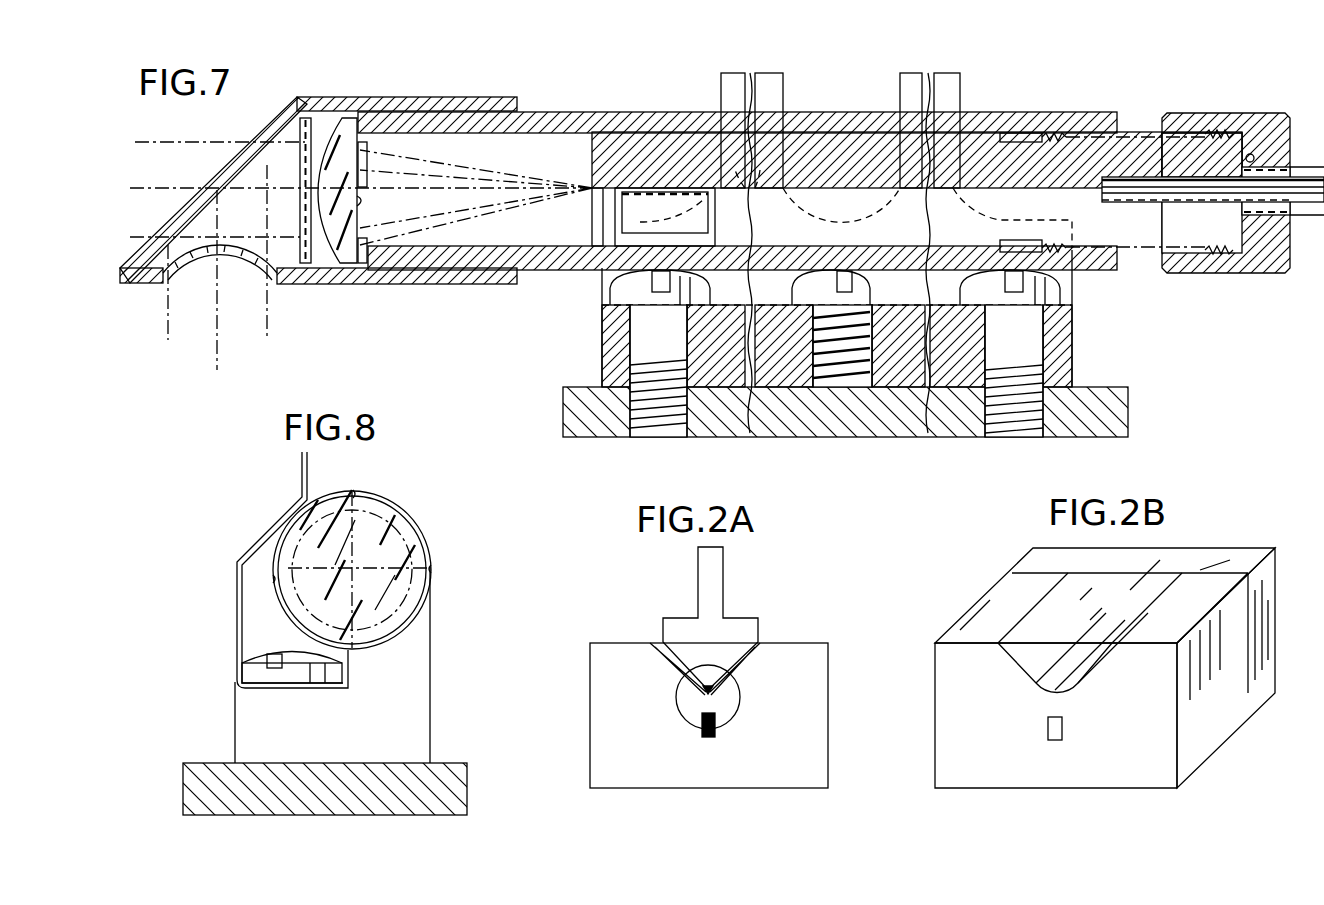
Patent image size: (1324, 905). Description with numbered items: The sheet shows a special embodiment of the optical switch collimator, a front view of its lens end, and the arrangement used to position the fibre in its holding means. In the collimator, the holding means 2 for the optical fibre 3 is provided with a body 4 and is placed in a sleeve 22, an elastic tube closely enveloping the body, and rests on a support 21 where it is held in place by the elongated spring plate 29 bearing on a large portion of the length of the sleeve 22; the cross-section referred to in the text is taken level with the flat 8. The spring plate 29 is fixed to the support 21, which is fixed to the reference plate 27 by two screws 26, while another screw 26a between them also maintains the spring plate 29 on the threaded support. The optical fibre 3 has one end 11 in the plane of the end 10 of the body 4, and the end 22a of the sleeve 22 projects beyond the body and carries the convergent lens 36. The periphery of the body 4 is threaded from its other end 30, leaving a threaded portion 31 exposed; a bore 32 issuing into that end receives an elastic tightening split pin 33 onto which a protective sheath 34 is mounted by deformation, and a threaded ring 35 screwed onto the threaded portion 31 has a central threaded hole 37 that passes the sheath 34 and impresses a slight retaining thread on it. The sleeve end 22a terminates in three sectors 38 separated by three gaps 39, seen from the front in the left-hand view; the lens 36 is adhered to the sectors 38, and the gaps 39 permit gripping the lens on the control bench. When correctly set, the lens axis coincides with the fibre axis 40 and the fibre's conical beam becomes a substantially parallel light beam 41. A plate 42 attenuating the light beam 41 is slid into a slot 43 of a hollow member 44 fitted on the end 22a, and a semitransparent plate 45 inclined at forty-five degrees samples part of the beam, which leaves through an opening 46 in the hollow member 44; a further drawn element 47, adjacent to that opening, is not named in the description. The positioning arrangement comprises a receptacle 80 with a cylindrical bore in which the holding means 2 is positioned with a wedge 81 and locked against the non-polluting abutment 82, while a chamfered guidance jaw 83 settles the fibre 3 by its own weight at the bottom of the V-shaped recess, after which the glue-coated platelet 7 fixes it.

In FIG. 7, the holding means 2 is at (991, 122).
In FIG. 2A, the holding means 2 is at (742, 702).
In FIG. 7, the optical fibre 3 is at (1052, 176).
In FIG. 2A, the optical fibre 3 is at (703, 690).
In FIG. 7, the body 4 is at (860, 160).
In FIG. 7, the platelet 7 is at (710, 195).
In FIG. 7, the flat 8 is at (722, 232).
In FIG. 7, the end of body 10 is at (590, 226).
In FIG. 7, the end of optical fibre 11 is at (586, 179).
In FIG. 7, the support 21 is at (608, 345).
In FIG. 8, the support 21 is at (431, 702).
In FIG. 7, the sleeve 22 is at (1035, 122).
In FIG. 8, the sleeve 22 is at (410, 513).
In FIG. 7, the end of sleeve 22a is at (408, 284).
In FIG. 7, the screws 26 is at (692, 343).
In FIG. 8, the screws 26 is at (300, 680).
In FIG. 7, the screw 26a is at (815, 350).
In FIG. 7, the plate 27 is at (1092, 398).
In FIG. 8, the plate 27 is at (446, 765).
In FIG. 7, the spring plate 29 is at (783, 88).
In FIG. 8, the spring plate 29 is at (302, 478).
In FIG. 7, the other end of body 30 is at (1243, 164).
In FIG. 7, the threaded portion 31 is at (1150, 254).
In FIG. 7, the bore 32 is at (1146, 180).
In FIG. 7, the elastic tightening split pin 33 is at (1145, 204).
In FIG. 7, the protective sheath 34 is at (1313, 164).
In FIG. 7, the threaded ring 35 is at (1255, 114).
In FIG. 7, the convergent lens 36 is at (332, 266).
In FIG. 8, the convergent lens 36 is at (325, 556).
In FIG. 7, the threaded hole 37 is at (1264, 244).
In FIG. 7, the sectors 38 is at (360, 205).
In FIG. 8, the sectors 38 is at (352, 490).
In FIG. 7, the gaps 39 is at (367, 160).
In FIG. 8, the gaps 39 is at (283, 537).
In FIG. 7, the fibre axis 40 is at (525, 196).
In FIG. 8, the fibre axis 40 is at (352, 572).
In FIG. 7, the light beam 41 is at (206, 148).
In FIG. 7, the plate 42 is at (300, 210).
In FIG. 7, the slot 43 is at (300, 167).
In FIG. 7, the hollow member 44 is at (484, 100).
In FIG. 7, the semitransparent plate 45 is at (192, 206).
In FIG. 7, the opening 46 is at (168, 318).
In FIG. 7, the window 47 is at (205, 264).
In FIG. 2A, the receptacle 80 is at (730, 786).
In FIG. 2B, the receptacle 80 is at (1210, 750).
In FIG. 2A, the wedge 81 is at (716, 732).
In FIG. 2B, the wedge 81 is at (1048, 735).
In FIG. 2B, the non-polluting abutment 82 is at (1255, 700).
In FIG. 2A, the guidance jaw 83 is at (698, 560).